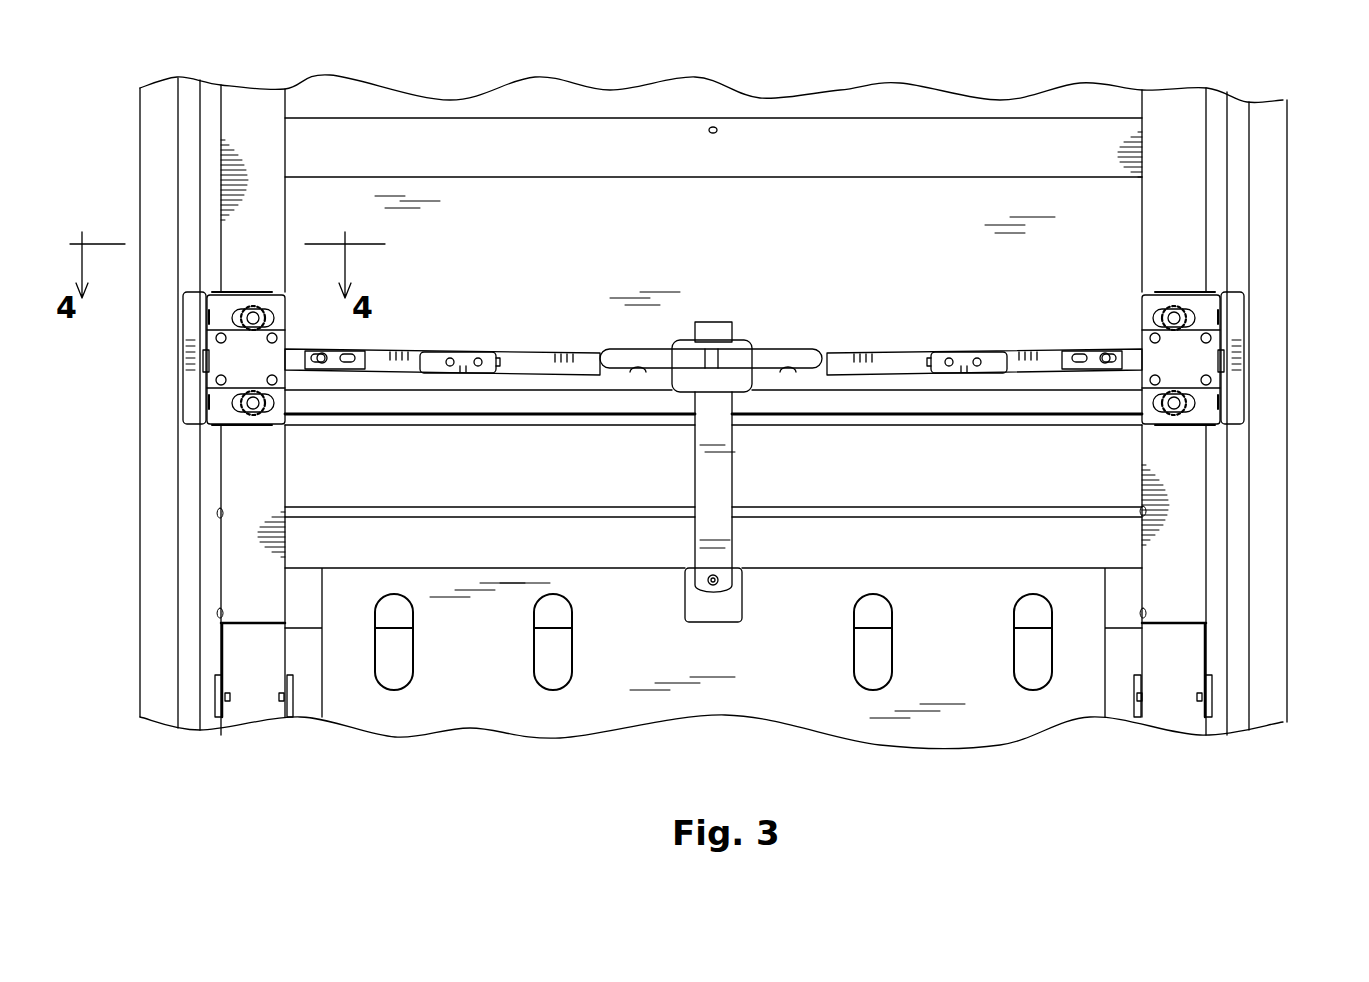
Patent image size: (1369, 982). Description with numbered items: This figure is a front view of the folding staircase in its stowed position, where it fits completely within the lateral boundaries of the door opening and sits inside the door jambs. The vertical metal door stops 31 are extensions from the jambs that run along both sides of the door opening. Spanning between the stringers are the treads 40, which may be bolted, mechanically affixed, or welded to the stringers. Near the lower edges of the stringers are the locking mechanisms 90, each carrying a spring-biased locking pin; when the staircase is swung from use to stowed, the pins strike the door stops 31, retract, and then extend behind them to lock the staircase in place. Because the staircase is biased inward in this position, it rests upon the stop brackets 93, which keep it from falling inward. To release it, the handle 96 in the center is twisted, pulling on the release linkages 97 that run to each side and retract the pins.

The door stop 31 is at (188, 143).
The tread 40 is at (787, 147).
The locking mechanism 90 is at (163, 351).
The stop bracket 93 is at (188, 405).
The handle 96 is at (775, 352).
The release linkage 97 is at (528, 350).